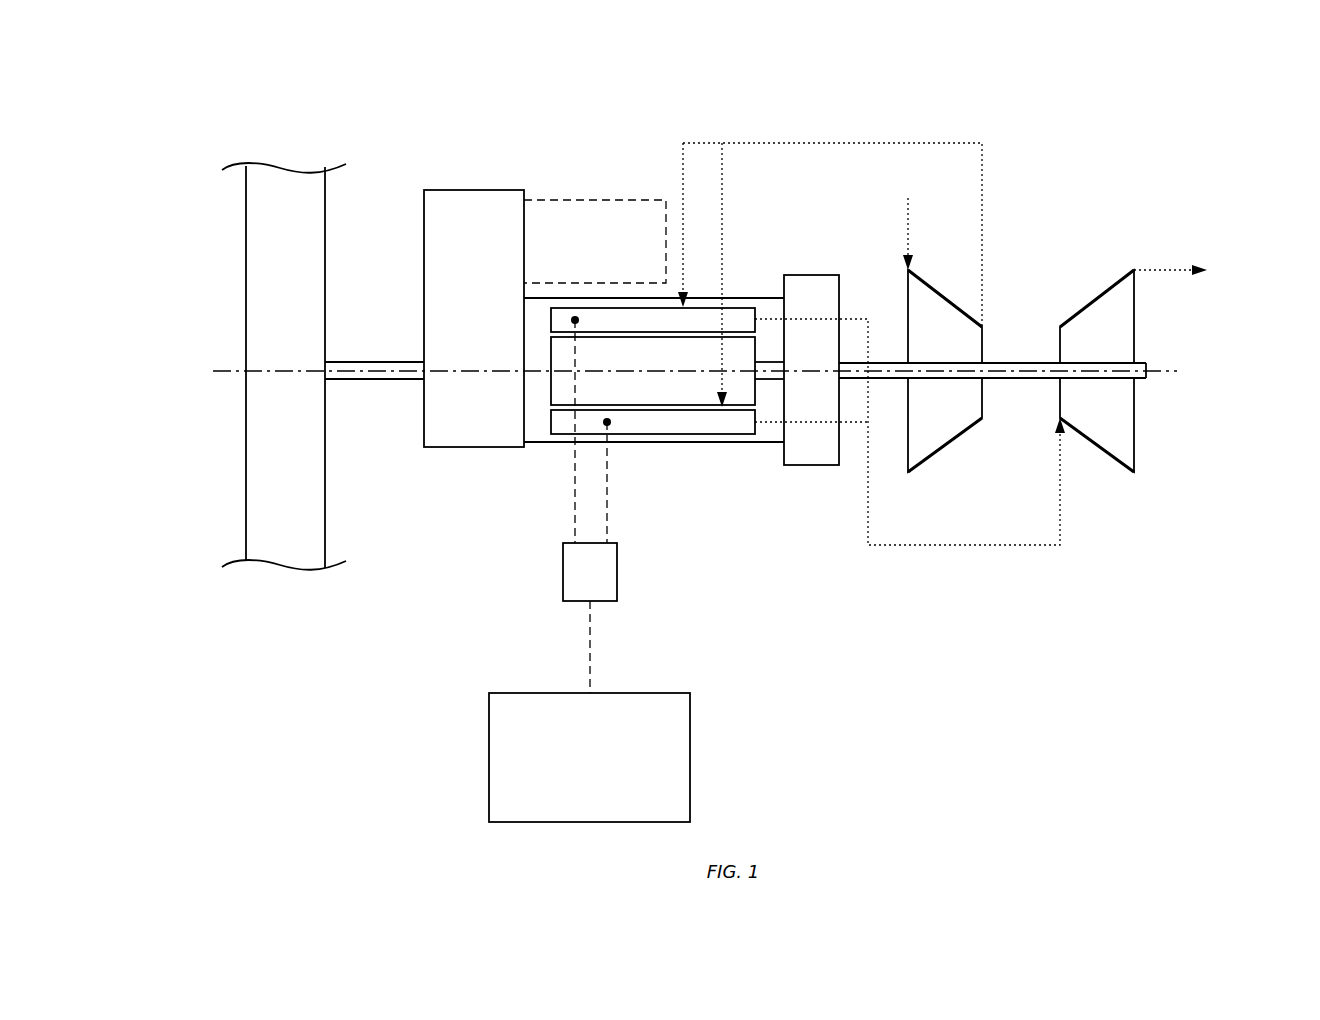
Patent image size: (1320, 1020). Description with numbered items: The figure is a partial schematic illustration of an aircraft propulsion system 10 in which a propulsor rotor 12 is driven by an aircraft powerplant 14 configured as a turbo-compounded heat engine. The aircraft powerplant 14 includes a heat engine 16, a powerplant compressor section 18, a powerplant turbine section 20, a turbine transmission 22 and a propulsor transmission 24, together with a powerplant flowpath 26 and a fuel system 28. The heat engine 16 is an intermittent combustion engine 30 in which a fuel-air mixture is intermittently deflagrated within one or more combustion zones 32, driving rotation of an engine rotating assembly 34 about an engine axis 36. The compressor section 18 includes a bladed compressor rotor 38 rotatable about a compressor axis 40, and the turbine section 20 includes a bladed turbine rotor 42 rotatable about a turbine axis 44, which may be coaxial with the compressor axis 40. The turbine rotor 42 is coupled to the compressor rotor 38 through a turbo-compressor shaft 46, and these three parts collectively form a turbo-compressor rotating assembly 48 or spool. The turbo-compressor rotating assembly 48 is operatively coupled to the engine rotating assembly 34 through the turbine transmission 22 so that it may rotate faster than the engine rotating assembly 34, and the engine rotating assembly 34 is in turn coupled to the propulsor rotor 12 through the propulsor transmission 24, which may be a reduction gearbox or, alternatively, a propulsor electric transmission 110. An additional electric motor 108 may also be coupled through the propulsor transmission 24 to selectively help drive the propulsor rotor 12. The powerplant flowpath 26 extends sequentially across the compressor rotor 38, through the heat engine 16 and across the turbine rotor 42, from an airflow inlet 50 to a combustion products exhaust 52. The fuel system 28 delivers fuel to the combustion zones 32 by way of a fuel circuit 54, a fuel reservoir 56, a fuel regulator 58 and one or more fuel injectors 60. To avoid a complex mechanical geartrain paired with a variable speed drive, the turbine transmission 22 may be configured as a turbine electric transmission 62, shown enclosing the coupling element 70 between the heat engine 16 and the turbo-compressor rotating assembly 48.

The propulsion system 10 is at (212, 114).
The propulsor rotor 12 is at (245, 232).
The aircraft powerplant 14 is at (964, 100).
The heat engine 16 is at (660, 377).
The powerplant compressor section 18 is at (952, 450).
The powerplant turbine section 20 is at (1112, 470).
The turbine transmission 22 is at (903, 433).
The propulsor transmission 24 is at (463, 302).
The powerplant flowpath 26 is at (818, 143).
The fuel system 28 is at (438, 750).
The intermittent combustion engine 30 is at (660, 377).
The combustion zone 32 is at (738, 308).
The engine rotating assembly 34 is at (543, 397).
The engine axis 36 is at (630, 372).
The compressor rotor 38 is at (983, 400).
The compressor axis 40 is at (928, 372).
The turbine rotor 42 is at (1134, 420).
The turbine axis 44 is at (1082, 372).
The turbo-compressor shaft 46 is at (1005, 362).
The turbo-compressor rotating assembly 48 is at (1148, 343).
The airflow inlet 50 is at (908, 198).
The combustion products exhaust 52 is at (1207, 270).
The fuel circuit 54 is at (590, 660).
The fuel reservoir 56 is at (690, 722).
The fuel regulator 58 is at (617, 572).
The fuel injector 60 is at (575, 318).
The turbine electric transmission 62 is at (820, 465).
The coupling 70 is at (803, 370).
The additional electric motor 108 is at (603, 200).
The propulsor electric transmission 110 is at (492, 190).